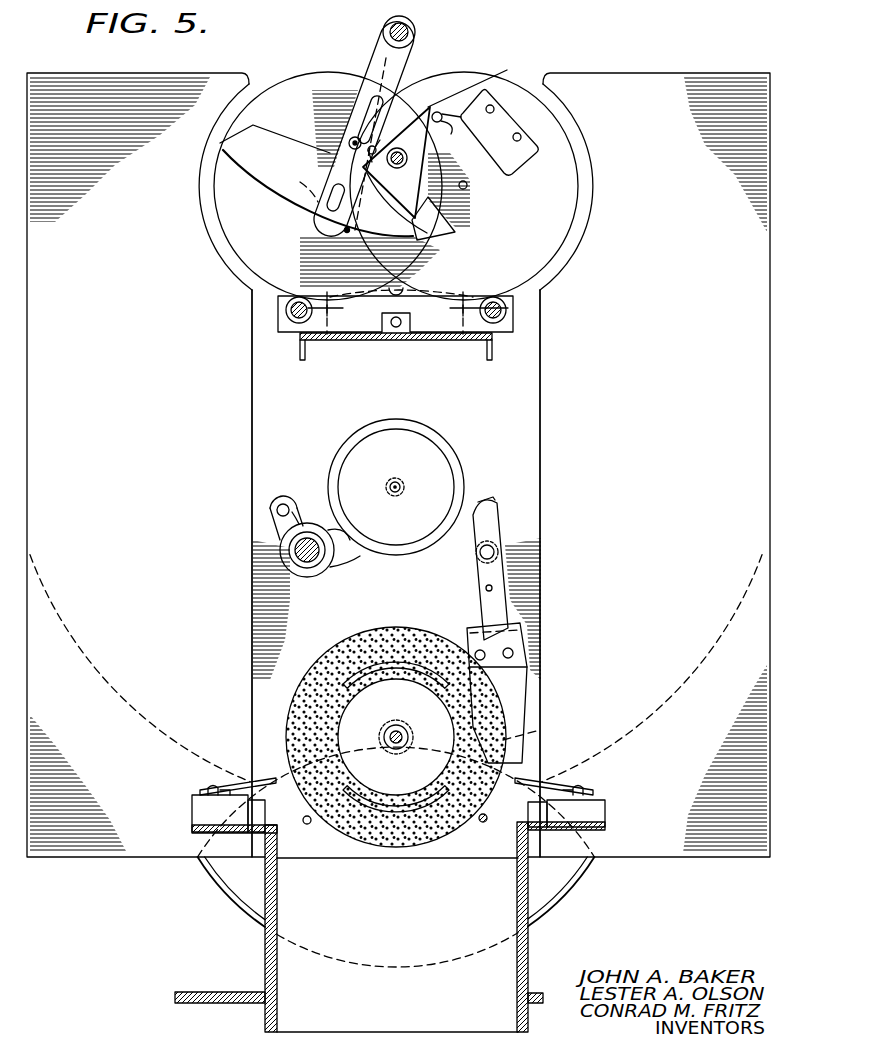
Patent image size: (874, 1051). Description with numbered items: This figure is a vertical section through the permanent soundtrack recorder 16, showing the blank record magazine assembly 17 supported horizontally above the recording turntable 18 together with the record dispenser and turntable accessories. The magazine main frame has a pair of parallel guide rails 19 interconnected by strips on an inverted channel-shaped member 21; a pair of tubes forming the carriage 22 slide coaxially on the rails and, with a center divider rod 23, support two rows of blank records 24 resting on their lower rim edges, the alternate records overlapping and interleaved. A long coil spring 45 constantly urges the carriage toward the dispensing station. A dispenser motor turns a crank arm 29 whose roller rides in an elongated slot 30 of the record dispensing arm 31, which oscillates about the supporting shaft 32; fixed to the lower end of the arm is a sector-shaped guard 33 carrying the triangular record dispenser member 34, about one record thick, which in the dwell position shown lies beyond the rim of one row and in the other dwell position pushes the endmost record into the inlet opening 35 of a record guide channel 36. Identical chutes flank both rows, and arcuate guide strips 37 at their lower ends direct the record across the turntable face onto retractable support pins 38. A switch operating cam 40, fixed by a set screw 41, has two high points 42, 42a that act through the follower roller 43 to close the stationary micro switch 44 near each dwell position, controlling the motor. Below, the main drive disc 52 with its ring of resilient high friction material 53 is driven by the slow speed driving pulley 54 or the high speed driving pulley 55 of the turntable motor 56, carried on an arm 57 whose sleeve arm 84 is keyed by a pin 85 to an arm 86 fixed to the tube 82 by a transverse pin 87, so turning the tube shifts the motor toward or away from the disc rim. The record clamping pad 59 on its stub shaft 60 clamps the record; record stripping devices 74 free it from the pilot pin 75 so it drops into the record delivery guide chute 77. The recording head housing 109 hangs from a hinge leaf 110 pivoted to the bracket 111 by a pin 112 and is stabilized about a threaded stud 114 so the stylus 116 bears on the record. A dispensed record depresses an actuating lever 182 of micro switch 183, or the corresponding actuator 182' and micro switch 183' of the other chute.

The permanent soundtrack recorder 16 is at (152, 890).
The blank record magazine assembly 17 is at (250, 395).
The recording turntable 18 is at (275, 714).
The guide rails 19 is at (297, 312).
The inverted channel-shaped member 21 is at (437, 342).
The carriage 22 is at (278, 297).
The center divider rod 23 is at (398, 284).
The blank records 24 is at (238, 238).
The crank arm 29 is at (377, 150).
The elongated slot 30 is at (357, 113).
The record dispensing arm 31 is at (370, 50).
The supporting shaft 32 is at (410, 32).
The sector-shaped guard 33 is at (254, 163).
The record dispenser member 34 is at (295, 184).
The inlet opening 35 is at (205, 157).
The record guide channel 36 is at (30, 355).
The arcuate guide strips 37 is at (124, 702).
The retractable support pins 38 is at (306, 823).
The switch operating cam 40 is at (388, 200).
The set screw 41 is at (399, 166).
The high point 42 is at (431, 107).
The high point 42a is at (433, 230).
The follower roller 43 is at (447, 133).
The micro switch 44 is at (487, 93).
The coil spring 45 is at (394, 328).
The main drive disc 52 is at (557, 883).
The ring of resilient high friction material 53 is at (550, 920).
The slow speed driving pulley 54 is at (386, 491).
The high speed driving pulley 55 is at (397, 478).
The turntable motor 56 is at (437, 452).
The arm 57 is at (327, 467).
The record clamping pad 59 is at (396, 737).
The stub shaft 60 is at (410, 738).
The record stripping devices 74 is at (397, 674).
The pilot pin 75 is at (385, 733).
The record delivery guide chute 77 is at (264, 951).
The tube 82 is at (321, 556).
The arm 84 is at (280, 527).
The pin 85 is at (282, 503).
The arm 86 is at (296, 517).
The transverse pin 87 is at (307, 560).
The recording head housing 109 is at (520, 690).
The hinge leaf 110 is at (513, 644).
The bracket 111 is at (483, 578).
The pin 112 is at (522, 630).
The threaded stud 114 is at (486, 590).
The stylus 116 is at (541, 730).
The actuating lever 182 is at (238, 763).
The actuator 182' is at (563, 764).
The micro switch 183 is at (197, 802).
The micro switch 183' is at (601, 811).